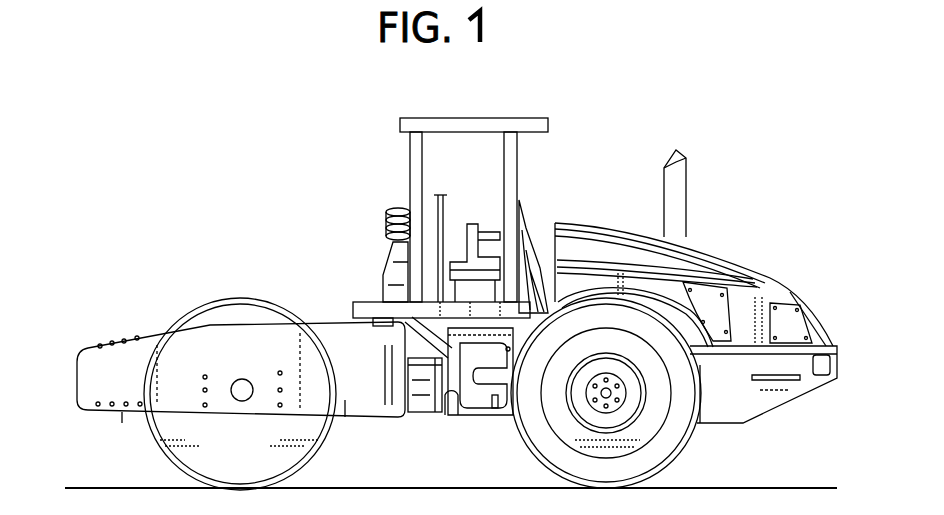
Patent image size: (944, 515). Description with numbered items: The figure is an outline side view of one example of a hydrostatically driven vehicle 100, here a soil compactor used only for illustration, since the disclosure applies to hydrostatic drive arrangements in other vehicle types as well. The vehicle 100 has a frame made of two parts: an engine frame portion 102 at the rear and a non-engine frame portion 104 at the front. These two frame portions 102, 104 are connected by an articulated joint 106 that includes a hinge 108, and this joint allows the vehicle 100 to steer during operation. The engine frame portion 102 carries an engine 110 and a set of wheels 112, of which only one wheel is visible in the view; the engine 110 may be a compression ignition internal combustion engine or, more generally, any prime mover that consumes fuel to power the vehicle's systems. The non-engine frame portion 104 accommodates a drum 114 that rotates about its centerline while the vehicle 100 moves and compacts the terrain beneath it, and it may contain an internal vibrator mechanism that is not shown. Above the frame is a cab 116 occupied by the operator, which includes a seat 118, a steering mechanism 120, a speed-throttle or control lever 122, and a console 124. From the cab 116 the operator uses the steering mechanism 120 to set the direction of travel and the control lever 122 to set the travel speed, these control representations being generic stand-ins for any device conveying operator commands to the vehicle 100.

The hydrostatically driven vehicle 100 is at (206, 125).
The engine frame portion 102 is at (790, 397).
The non-engine frame portion 104 is at (364, 403).
The articulated joint 106 is at (427, 421).
The hinge 108 is at (455, 420).
The engine 110 is at (733, 256).
The set of wheels 112 is at (680, 456).
The drum 114 is at (233, 297).
The cab 116 is at (540, 101).
The seat 118 is at (483, 225).
The steering mechanism 120 is at (393, 203).
The control lever 122 is at (440, 210).
The console 124 is at (393, 270).